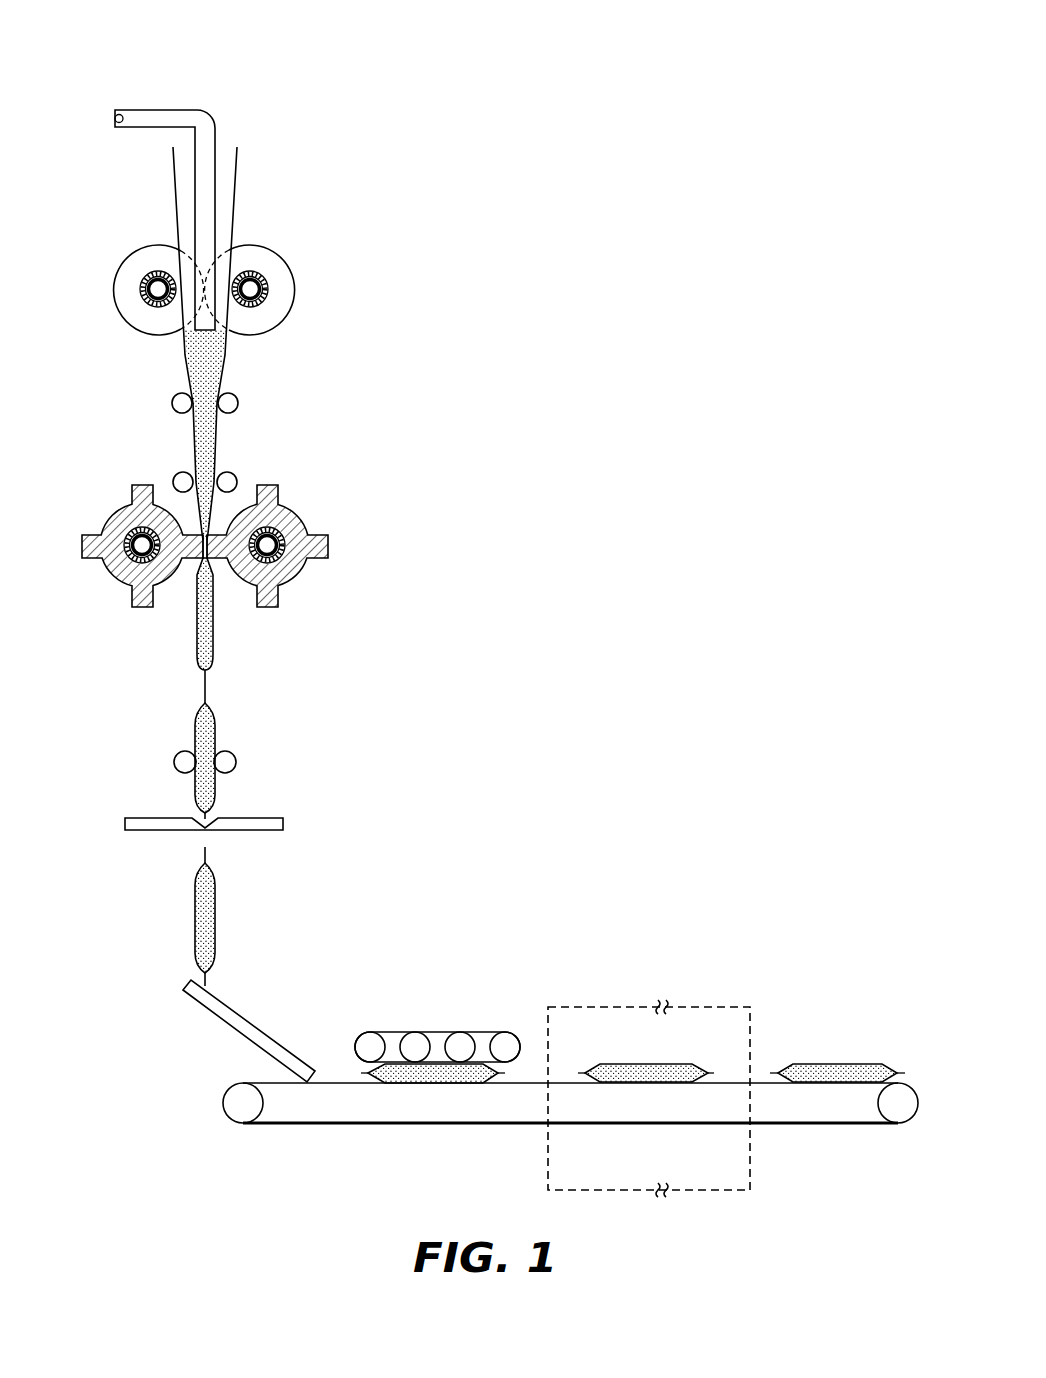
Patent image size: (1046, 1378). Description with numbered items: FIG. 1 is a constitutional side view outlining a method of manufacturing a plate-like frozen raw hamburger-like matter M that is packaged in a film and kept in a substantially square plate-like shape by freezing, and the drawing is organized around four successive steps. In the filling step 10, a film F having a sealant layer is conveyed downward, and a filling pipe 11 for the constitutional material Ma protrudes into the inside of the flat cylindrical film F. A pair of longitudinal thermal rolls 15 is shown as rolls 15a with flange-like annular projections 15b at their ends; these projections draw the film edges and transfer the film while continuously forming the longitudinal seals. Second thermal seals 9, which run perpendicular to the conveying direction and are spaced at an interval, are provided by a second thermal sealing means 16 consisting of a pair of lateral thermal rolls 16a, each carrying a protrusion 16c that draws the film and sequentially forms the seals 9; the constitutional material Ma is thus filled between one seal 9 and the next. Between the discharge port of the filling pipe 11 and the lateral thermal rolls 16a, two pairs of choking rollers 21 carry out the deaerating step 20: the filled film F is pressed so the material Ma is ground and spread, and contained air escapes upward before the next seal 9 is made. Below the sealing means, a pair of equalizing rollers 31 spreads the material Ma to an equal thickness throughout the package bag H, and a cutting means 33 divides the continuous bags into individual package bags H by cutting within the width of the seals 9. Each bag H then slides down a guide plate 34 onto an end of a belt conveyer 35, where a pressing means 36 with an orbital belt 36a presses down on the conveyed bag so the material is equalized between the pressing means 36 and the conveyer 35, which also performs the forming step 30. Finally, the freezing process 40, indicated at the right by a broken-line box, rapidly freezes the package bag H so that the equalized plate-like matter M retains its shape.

The filling step 10 is at (177, 72).
The filling pipe 11 is at (185, 115).
The film F is at (173, 170).
The longitudinal thermal rolls 15 is at (294, 214).
The longitudinal thermal roll 15a is at (128, 275).
The annular projection 15b is at (283, 275).
The deaerating step 20 is at (264, 436).
The choking roller 21 is at (175, 400).
The second thermal sealing means 16 is at (324, 484).
The lateral thermal roll 16a is at (126, 512).
The protrusion 16c is at (330, 548).
The second thermal seal 9 is at (201, 560).
The package bag H is at (196, 645).
The constitutional material Ma is at (215, 652).
The forming step 30 is at (152, 733).
The equalizing roller 31 is at (174, 762).
The cutting means 33 is at (143, 826).
The guide plate 34 is at (210, 1010).
The belt conveyer 35 is at (293, 1115).
The pressing means 36 is at (500, 1032).
The orbital belt 36a is at (433, 1032).
The freezing process 40 is at (770, 1018).
The raw hamburger-like matter M is at (835, 1070).